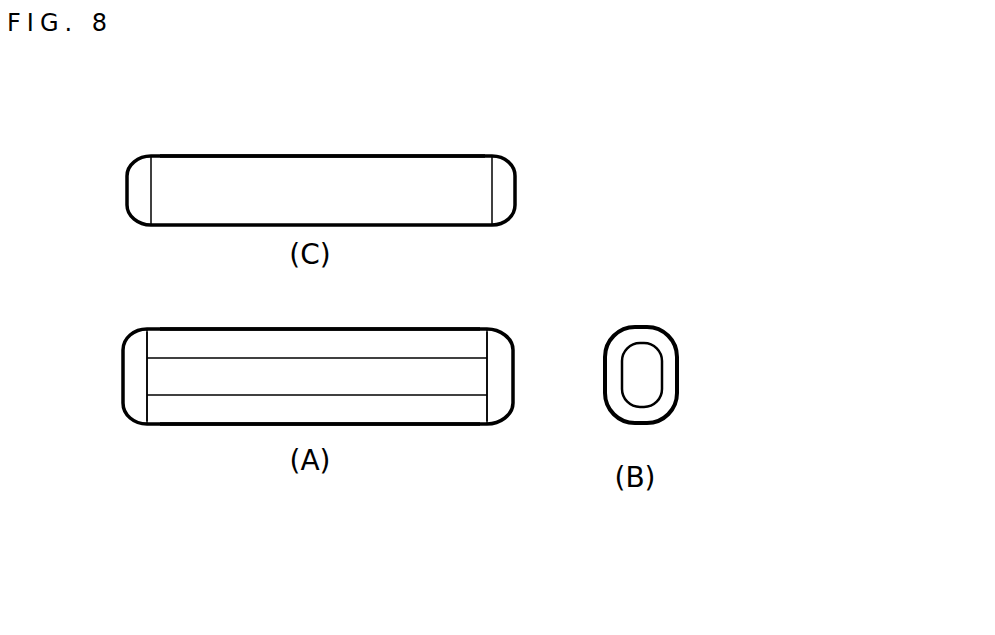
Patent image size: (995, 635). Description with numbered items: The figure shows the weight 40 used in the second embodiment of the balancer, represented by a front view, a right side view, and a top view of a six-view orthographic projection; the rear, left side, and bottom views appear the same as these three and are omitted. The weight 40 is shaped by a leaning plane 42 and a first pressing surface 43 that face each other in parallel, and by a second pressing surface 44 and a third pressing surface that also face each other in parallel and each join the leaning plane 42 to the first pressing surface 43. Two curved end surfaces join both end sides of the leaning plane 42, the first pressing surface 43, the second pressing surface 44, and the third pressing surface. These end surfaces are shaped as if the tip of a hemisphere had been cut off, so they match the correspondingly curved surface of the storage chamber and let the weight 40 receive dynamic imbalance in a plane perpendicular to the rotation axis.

The weight 40 is at (331, 206).
The leaning plane 42 is at (257, 382).
The first pressing surface 43 is at (680, 375).
The second pressing surface 44 is at (350, 427).